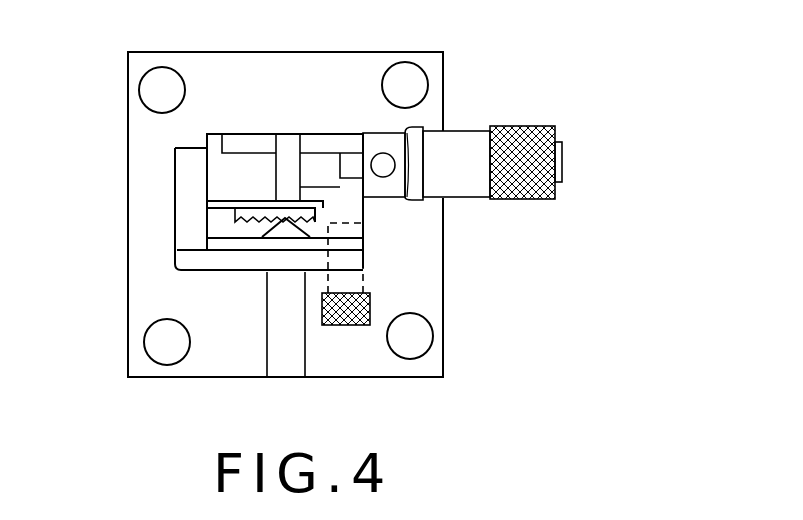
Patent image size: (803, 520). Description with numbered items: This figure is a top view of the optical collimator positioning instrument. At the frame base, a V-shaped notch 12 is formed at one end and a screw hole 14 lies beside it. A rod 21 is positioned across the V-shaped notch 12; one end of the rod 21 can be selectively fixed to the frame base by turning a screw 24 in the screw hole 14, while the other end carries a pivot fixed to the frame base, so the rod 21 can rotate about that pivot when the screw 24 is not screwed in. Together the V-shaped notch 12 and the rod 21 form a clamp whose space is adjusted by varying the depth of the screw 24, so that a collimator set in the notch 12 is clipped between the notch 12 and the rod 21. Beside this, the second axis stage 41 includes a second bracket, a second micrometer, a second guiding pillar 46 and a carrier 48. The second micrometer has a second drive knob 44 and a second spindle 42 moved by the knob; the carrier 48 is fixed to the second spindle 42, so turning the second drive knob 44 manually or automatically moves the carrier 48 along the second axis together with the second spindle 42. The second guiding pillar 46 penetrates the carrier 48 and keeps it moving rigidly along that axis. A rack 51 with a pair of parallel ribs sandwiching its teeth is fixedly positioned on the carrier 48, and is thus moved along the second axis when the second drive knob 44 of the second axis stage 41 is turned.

The V-shaped notch 12 is at (270, 238).
The screw hole 14 is at (365, 227).
The rod 21 is at (227, 272).
The screw 24 is at (350, 326).
The second axis stage 41 is at (455, 123).
The second spindle 42 is at (350, 181).
The second drive knob 44 is at (530, 127).
The second guiding pillar 46 is at (333, 133).
The carrier 48 is at (208, 210).
The rack 51 is at (235, 213).